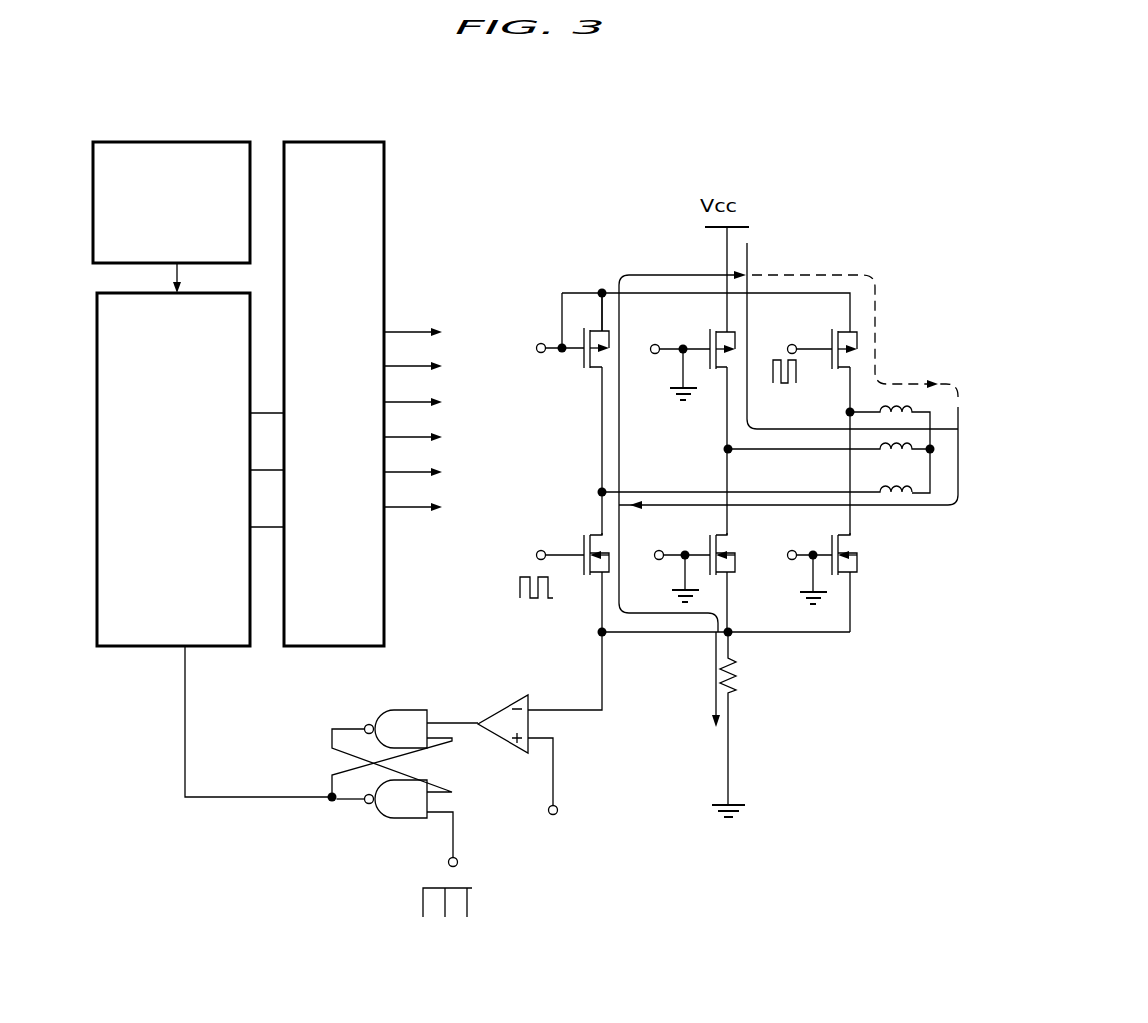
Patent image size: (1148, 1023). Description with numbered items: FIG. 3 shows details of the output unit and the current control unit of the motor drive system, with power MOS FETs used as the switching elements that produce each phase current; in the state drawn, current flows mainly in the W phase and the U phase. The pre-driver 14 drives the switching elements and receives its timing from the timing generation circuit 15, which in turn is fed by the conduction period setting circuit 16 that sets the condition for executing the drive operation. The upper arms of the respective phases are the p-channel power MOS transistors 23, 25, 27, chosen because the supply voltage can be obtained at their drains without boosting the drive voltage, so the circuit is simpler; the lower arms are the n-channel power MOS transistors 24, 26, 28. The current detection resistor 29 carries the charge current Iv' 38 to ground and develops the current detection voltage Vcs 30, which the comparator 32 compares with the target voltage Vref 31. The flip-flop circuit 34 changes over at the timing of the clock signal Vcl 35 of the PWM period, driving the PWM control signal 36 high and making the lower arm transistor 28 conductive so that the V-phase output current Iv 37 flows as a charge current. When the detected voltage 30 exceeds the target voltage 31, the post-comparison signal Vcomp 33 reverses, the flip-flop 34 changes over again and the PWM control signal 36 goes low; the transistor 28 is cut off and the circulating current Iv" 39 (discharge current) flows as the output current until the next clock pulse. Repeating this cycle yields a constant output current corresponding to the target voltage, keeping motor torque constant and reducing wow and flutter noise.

The pre-driver 14 is at (348, 142).
The timing generation circuit 15 is at (212, 650).
The conduction period setting circuit 16 is at (195, 142).
The p-channel power MOS transistor 23 is at (852, 312).
The n-channel power MOS transistor 24 is at (858, 575).
The p-channel power MOS transistor 25 is at (737, 333).
The n-channel power MOS transistor 26 is at (738, 575).
The p-channel power MOS transistor 27 is at (587, 322).
The n-channel power MOS transistor 28 is at (575, 530).
The current detection resistor 29 is at (740, 681).
The current detection voltage Vcs 30 is at (617, 684).
The target voltage Vref 31 is at (595, 817).
The comparator 32 is at (528, 700).
The post-comparison signal Vcomp 33 is at (455, 722).
The flip-flop circuit 34 is at (378, 814).
The clock signal Vcl 35 is at (539, 898).
The PWM control signal 36 is at (185, 773).
The V-phase output current Iv 37 is at (794, 430).
The charge current Iv' 38 is at (717, 711).
The circulating current Iv" 39 is at (650, 268).